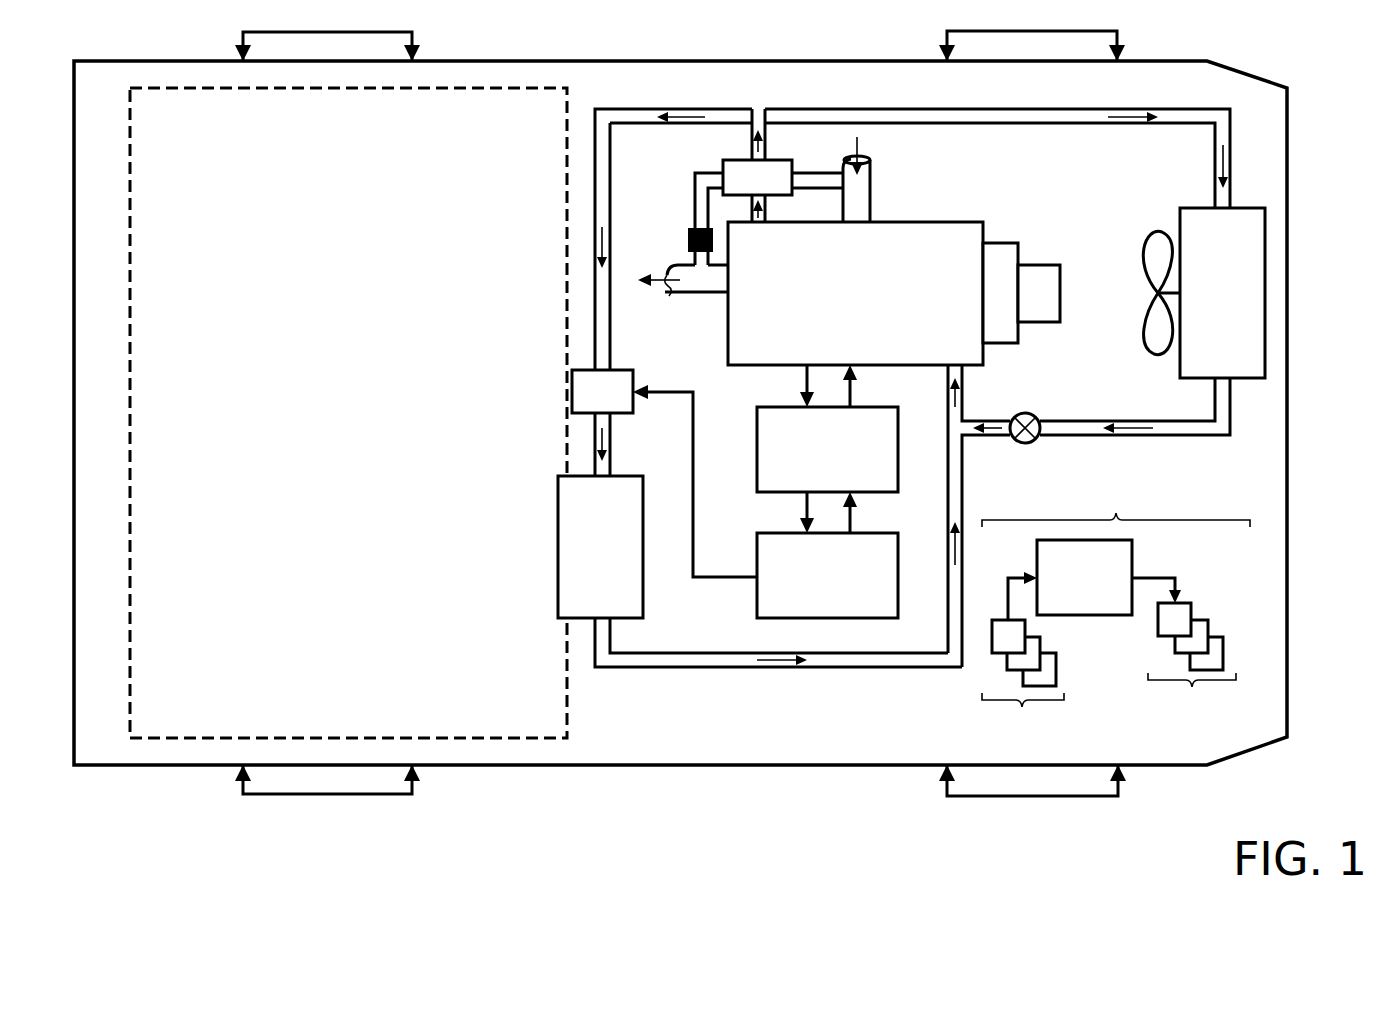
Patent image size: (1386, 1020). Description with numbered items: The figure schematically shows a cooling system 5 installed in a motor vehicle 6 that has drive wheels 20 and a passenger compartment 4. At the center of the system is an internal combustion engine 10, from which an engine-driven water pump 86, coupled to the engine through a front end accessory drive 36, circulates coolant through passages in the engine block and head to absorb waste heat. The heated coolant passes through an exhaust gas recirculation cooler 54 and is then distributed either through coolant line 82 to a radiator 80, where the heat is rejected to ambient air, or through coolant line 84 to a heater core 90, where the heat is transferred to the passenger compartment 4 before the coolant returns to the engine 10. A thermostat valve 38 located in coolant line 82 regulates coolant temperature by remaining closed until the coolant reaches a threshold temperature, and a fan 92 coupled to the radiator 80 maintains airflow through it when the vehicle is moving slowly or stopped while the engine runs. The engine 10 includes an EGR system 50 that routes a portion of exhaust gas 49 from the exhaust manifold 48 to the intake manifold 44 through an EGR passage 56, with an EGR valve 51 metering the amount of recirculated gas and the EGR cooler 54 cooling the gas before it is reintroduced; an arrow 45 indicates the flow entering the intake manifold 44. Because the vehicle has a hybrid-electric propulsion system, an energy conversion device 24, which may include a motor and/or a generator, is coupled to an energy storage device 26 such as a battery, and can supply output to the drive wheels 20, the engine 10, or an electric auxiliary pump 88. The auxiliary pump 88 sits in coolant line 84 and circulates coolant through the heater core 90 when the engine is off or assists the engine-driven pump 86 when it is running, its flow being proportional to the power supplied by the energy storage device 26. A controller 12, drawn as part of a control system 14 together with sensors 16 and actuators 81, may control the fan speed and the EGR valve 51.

The passenger compartment 4 is at (294, 457).
The cooling system 5 is at (1246, 144).
The motor vehicle 6 is at (608, 61).
The internal combustion engine 10 is at (942, 260).
The controller 12 is at (1071, 590).
The control system 14 is at (1116, 493).
The sensors 16 is at (1022, 664).
The drive wheels 20 is at (328, 30).
The energy conversion device 24 is at (814, 461).
The energy storage device 26 is at (814, 587).
The front end accessory drive 36 is at (1000, 242).
The thermostat valve 38 is at (1028, 410).
The intake manifold 44 is at (872, 198).
The intake air flow 45 is at (861, 152).
The exhaust manifold 48 is at (705, 293).
The exhaust gas 49 is at (664, 286).
The exhaust gas recirculation system 50 is at (673, 176).
The EGR valve 51 is at (688, 237).
The EGR cooler 54 is at (770, 190).
The EGR passage 56 is at (800, 172).
The radiator 80 is at (1209, 305).
The actuators 81 is at (1191, 658).
The coolant line 82 is at (1035, 108).
The coolant line 84 is at (678, 108).
The engine-driven water pump 86 is at (1026, 305).
The electric auxiliary pump 88 is at (589, 404).
The heater core 90 is at (587, 559).
The fan 92 is at (1143, 253).